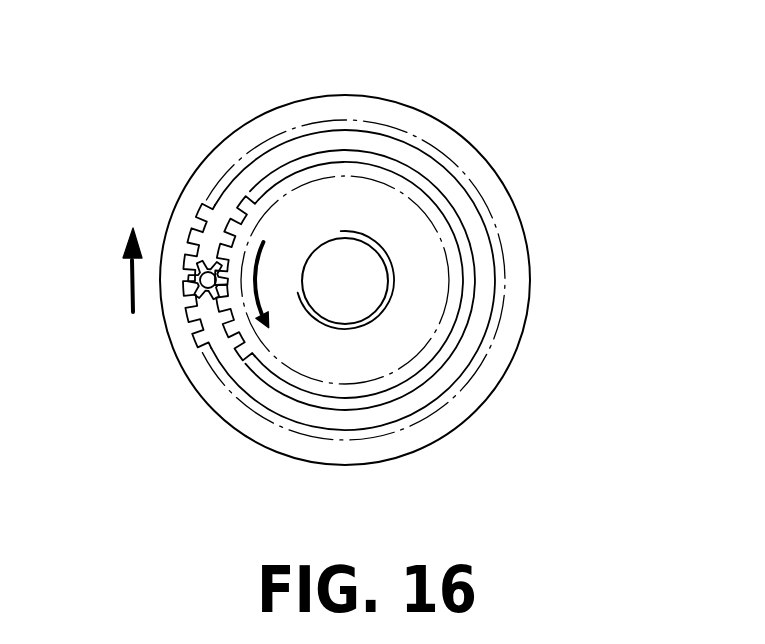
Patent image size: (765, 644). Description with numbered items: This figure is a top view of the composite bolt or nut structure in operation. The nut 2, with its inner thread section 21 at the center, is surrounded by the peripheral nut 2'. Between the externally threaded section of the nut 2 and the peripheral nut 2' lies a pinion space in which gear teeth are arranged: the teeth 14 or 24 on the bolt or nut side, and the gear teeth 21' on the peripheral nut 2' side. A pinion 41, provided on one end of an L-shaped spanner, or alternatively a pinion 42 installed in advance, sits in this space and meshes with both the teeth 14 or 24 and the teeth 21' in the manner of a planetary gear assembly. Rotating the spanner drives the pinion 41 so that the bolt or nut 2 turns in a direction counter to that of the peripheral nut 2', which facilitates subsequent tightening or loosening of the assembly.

The nut 2 is at (353, 226).
The peripheral nut 2' is at (381, 280).
The inner thread section 21 is at (380, 177).
The pinion space teeth 21' is at (285, 280).
The teeth 24 is at (291, 343).
The teeth 14 is at (252, 344).
The pinion 41 is at (141, 214).
The pinion 42 is at (203, 267).